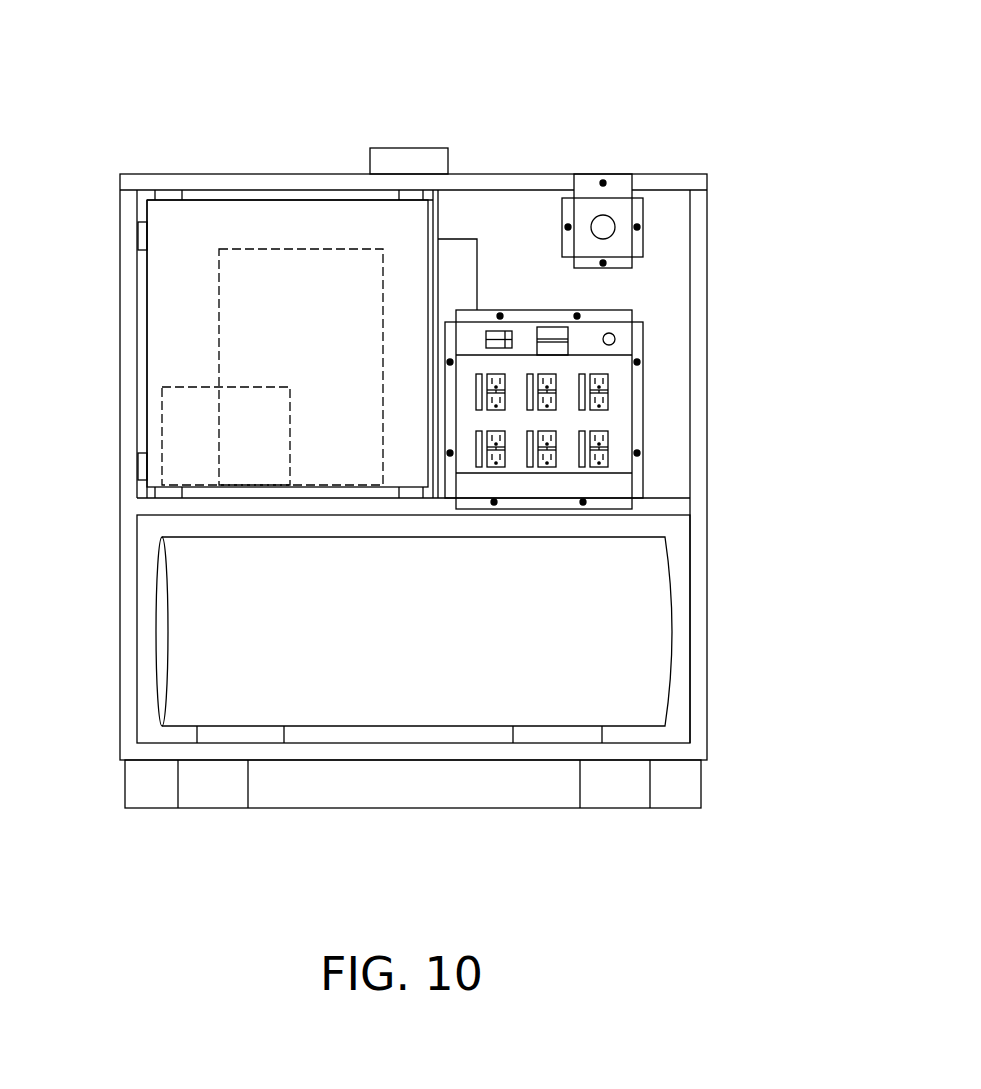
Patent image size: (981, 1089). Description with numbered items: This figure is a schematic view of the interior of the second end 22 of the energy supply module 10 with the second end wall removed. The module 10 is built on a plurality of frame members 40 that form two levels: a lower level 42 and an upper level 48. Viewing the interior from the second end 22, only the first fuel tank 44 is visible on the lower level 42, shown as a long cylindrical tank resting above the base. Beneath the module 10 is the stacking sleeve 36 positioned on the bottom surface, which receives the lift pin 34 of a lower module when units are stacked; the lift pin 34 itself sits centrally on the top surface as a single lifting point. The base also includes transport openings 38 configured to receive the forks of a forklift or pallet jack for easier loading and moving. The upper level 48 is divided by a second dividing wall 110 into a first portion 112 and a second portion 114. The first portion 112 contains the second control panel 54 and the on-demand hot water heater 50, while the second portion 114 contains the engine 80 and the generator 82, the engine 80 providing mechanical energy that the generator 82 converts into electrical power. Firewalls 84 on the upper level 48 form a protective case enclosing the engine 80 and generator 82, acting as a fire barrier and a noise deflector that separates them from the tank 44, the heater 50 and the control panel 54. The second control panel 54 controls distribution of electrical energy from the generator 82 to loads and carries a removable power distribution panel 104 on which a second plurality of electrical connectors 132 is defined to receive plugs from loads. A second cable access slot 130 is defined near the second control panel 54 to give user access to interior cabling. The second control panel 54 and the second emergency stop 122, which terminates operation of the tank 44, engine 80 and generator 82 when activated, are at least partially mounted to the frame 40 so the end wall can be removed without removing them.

The energy supply module 10 is at (138, 88).
The second end 22 is at (687, 724).
The lift pin 34 is at (388, 162).
The stacking sleeve 36 is at (414, 773).
The transport openings 38 is at (616, 790).
The frame members 40 is at (708, 383).
The lower level 42 is at (682, 528).
The first fuel tank 44 is at (437, 637).
The upper level 48 is at (181, 338).
The hot water heater 50 is at (467, 238).
The second control panel 54 is at (657, 384).
The engine 80 is at (217, 312).
The generator 82 is at (162, 428).
The firewalls 84 is at (185, 242).
The removable power distribution panel 104 is at (580, 422).
The second dividing wall 110 is at (442, 198).
The first portion 112 is at (659, 279).
The second portion 114 is at (286, 226).
The second emergency stop 122 is at (615, 218).
The second cable access slot 130 is at (608, 485).
The second plurality of electrical connectors 132 is at (603, 455).